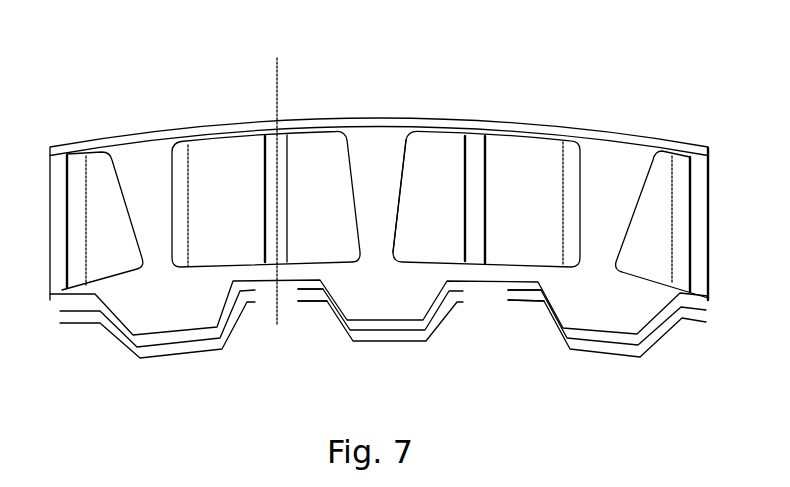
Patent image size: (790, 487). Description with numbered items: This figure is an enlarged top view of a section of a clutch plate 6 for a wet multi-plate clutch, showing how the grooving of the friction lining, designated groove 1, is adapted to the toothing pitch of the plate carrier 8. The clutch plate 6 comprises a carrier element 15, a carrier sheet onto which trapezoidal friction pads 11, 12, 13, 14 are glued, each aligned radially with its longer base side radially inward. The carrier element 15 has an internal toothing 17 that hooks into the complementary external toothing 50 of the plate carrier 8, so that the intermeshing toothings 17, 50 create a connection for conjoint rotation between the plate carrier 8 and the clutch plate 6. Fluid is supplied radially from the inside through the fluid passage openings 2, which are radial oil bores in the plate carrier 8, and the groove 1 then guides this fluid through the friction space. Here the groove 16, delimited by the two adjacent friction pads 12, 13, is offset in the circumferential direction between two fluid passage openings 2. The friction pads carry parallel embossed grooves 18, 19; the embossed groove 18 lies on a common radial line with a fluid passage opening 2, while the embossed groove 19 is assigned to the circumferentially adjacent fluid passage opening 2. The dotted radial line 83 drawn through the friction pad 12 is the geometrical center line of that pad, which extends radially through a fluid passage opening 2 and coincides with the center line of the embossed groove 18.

The groove 1 is at (379, 209).
The fluid passage opening 2 is at (265, 313).
The clutch plate 6 is at (671, 122).
The plate carrier 8 is at (110, 346).
The friction pad 11 is at (61, 163).
The friction pad 12 is at (215, 154).
The friction pad 13 is at (532, 147).
The friction pad 14 is at (703, 168).
The carrier element 15 is at (130, 150).
The groove 16 is at (405, 140).
The toothing 17 is at (332, 313).
The embossed groove 18 is at (282, 135).
The embossed groove 19 is at (485, 124).
The toothing 50 is at (233, 312).
The center axis line 83 is at (277, 58).